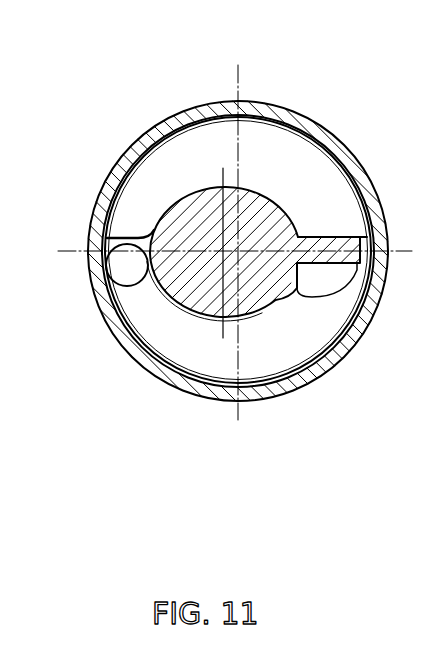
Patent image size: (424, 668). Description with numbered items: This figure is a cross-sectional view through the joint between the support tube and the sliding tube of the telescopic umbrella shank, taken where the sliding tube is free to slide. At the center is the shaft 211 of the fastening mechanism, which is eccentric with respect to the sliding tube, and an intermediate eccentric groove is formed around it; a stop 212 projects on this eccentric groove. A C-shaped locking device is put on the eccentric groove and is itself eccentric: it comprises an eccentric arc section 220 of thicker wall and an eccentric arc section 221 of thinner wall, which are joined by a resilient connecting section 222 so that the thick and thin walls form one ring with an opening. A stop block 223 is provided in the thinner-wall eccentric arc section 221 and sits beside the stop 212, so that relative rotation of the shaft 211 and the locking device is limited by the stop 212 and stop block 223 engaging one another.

The shaft 211 is at (178, 218).
The stop 212 is at (328, 238).
The eccentric arc section of thicker wall 220 is at (177, 150).
The eccentric arc section of thinner wall 221 is at (215, 362).
The resilient connecting section 222 is at (377, 292).
The stop block 223 is at (126, 278).